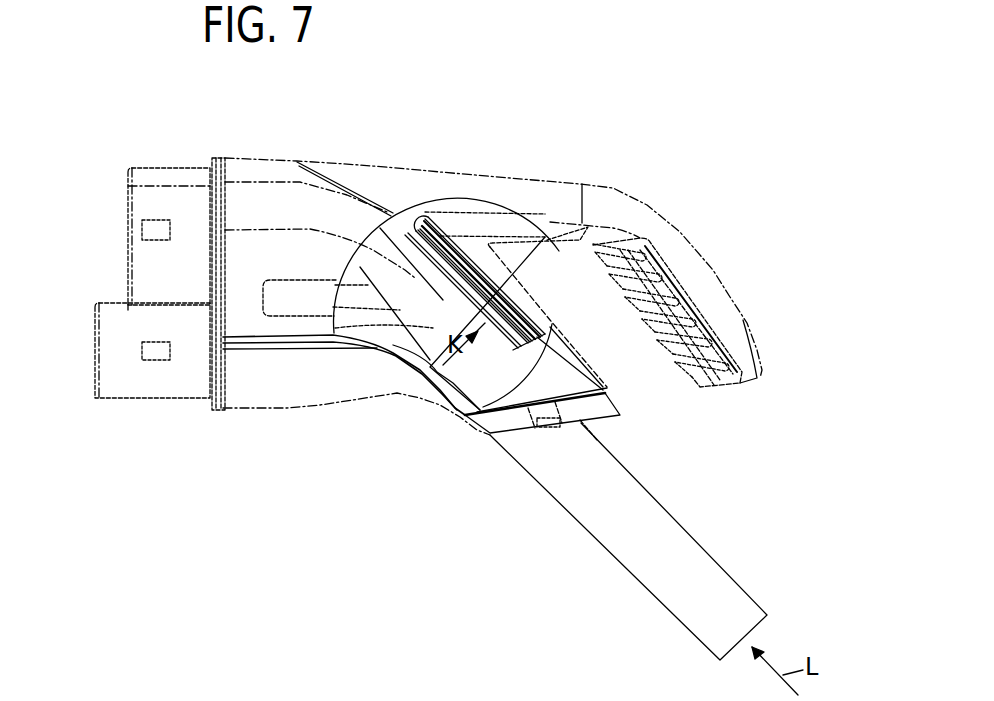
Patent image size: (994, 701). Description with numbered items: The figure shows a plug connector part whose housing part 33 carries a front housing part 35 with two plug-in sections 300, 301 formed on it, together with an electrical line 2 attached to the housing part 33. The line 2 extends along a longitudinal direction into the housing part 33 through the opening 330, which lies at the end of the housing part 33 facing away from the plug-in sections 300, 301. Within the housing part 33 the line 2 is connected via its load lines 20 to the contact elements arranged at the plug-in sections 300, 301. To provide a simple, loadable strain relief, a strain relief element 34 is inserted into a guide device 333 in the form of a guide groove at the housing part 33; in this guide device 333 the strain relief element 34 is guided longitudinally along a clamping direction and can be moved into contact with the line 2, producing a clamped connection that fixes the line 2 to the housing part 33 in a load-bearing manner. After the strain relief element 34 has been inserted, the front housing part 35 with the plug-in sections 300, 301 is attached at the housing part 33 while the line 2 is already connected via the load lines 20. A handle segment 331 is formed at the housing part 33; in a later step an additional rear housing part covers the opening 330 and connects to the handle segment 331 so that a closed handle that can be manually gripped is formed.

The line 2 is at (593, 517).
The load lines 20 is at (405, 335).
The housing part 33 is at (377, 385).
The strain relief element 34 is at (448, 300).
The front housing part 35 is at (218, 402).
The plug-in section 300 is at (159, 178).
The plug-in section 301 is at (123, 388).
The opening 330 is at (502, 447).
The handle segment 331 is at (708, 303).
The guide device 333 is at (500, 313).